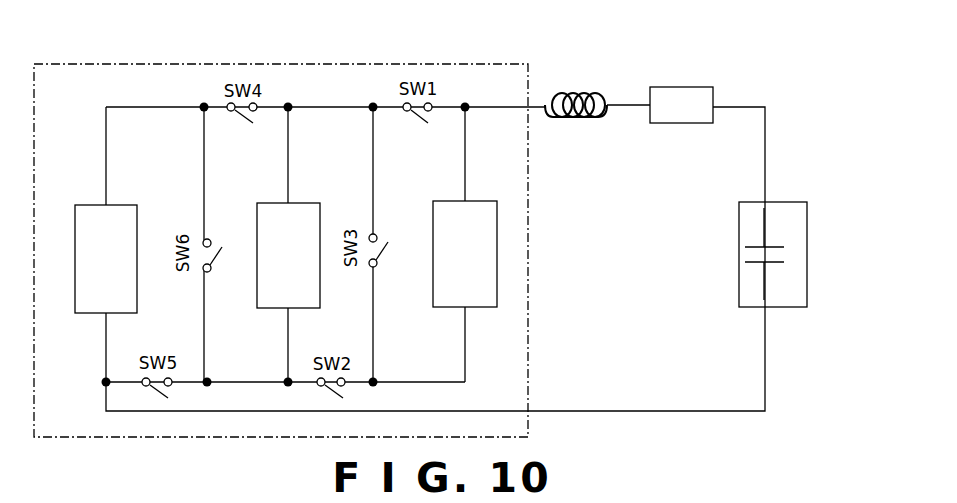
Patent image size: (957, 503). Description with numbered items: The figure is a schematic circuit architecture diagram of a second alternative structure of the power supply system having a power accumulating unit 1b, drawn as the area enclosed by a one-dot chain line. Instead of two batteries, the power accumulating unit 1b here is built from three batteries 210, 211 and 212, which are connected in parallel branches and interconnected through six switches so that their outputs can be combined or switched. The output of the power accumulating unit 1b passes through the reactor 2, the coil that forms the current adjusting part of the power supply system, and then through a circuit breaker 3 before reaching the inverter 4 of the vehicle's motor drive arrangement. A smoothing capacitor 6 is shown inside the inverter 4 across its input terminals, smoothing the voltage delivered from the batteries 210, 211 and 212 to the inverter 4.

The power accumulating unit 1b is at (316, 63).
The reactor 2 is at (570, 90).
The circuit breaker 3 is at (683, 93).
The inverter 4 is at (781, 239).
The smoothing capacitor 6 is at (753, 258).
The battery 210 is at (447, 298).
The battery 211 is at (294, 298).
The battery 212 is at (92, 276).